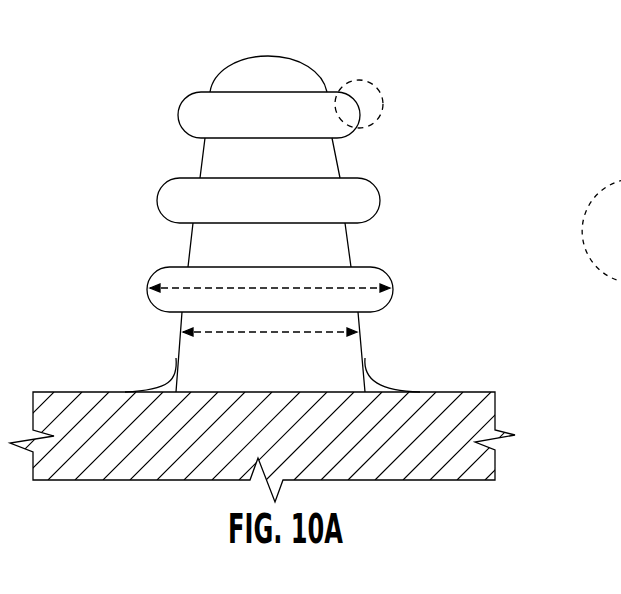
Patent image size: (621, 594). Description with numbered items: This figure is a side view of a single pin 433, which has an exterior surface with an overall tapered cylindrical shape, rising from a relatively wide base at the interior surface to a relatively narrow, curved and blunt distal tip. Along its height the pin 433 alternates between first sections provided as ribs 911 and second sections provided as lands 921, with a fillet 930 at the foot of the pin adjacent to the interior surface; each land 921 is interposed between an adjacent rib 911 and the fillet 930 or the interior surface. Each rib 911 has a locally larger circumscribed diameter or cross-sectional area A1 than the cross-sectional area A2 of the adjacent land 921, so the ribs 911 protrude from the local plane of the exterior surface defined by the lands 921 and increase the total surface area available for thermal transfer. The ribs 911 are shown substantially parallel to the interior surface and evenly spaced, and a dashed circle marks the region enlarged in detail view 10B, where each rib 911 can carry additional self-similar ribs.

The pin 433 is at (300, 60).
The rib 911 is at (178, 116).
The land 921 is at (203, 148).
The fillet 930 is at (396, 383).
The cross-sectional area of first section A1 is at (223, 288).
The cross-sectional area of second section A2 is at (300, 334).
The detail view reference 10B is at (382, 114).